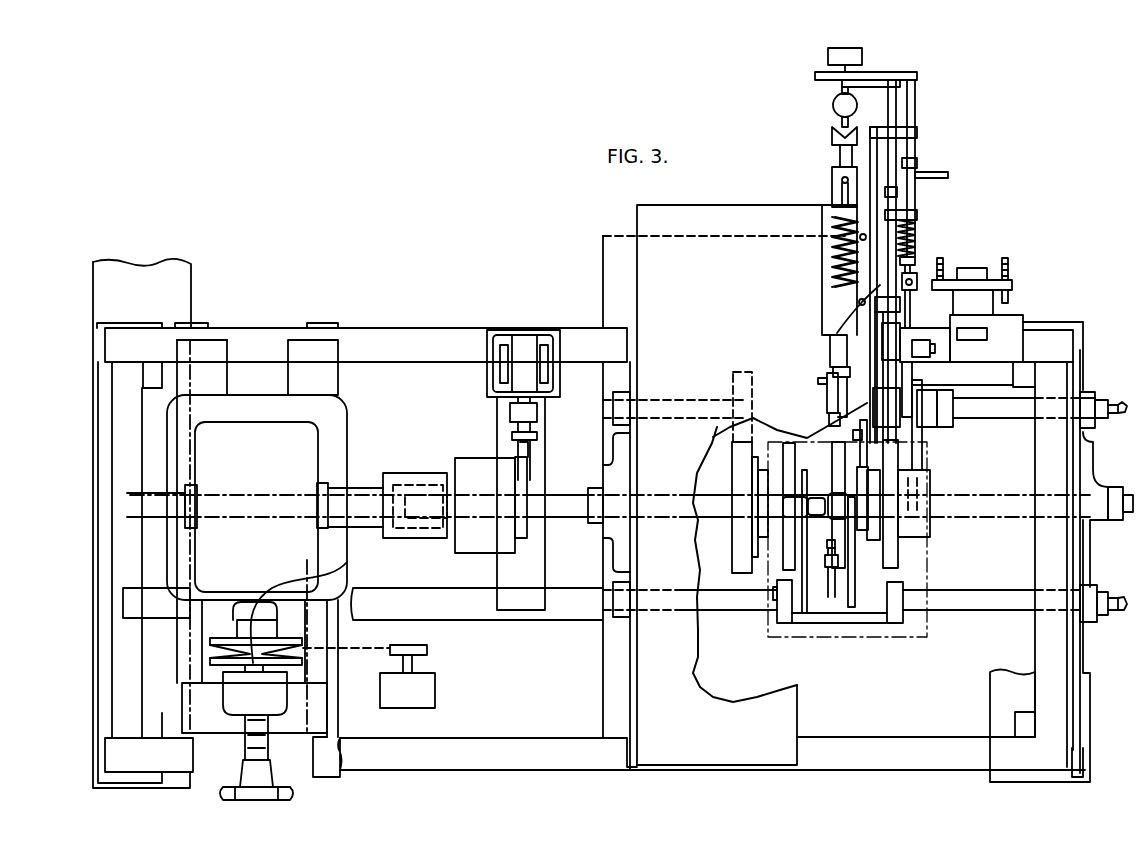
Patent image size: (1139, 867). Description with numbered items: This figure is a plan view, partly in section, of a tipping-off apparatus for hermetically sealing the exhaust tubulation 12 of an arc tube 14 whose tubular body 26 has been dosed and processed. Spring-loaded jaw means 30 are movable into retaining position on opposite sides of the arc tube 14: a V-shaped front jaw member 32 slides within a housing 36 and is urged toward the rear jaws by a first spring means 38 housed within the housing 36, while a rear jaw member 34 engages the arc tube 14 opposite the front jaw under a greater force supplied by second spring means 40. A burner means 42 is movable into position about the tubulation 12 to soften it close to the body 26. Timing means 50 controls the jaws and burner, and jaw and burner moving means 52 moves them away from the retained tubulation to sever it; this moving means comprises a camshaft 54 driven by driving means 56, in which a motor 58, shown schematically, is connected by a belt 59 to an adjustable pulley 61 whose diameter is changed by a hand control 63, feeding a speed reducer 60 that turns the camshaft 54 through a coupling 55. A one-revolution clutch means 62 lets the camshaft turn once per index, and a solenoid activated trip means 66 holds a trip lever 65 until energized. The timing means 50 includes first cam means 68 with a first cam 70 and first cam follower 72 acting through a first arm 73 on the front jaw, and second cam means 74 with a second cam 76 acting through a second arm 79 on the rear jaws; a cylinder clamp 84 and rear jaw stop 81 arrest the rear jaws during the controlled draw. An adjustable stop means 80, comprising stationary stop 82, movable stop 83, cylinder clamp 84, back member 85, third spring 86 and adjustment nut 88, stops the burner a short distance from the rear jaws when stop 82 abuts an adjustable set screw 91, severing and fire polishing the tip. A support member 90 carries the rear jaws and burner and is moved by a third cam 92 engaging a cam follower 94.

The exhaust tubulation 12 is at (852, 67).
The arc tube 14 is at (834, 106).
The tubular body 26 is at (856, 105).
The jaw means 30 is at (896, 102).
The front jaw member 32 is at (832, 138).
The rear jaw member 34 is at (842, 87).
The housing 36 is at (830, 207).
The first spring means 38 is at (833, 280).
The second spring means 40 is at (900, 317).
The burner means 42 is at (917, 74).
The timing means 50 is at (928, 562).
The jaw and burner moving means 52 is at (561, 520).
The camshaft 54 is at (565, 497).
The coupling 55 is at (426, 473).
The driving means 56 is at (205, 532).
The motor 58 is at (437, 688).
The belt 59 is at (366, 651).
The speed reducer 60 is at (310, 448).
The adjustable pulley 61 is at (210, 653).
The one-revolution clutch means 62 is at (522, 470).
The hand control 63 is at (273, 787).
The trip lever 65 is at (522, 452).
The solenoid activated trip means 66 is at (525, 343).
The first cam means 68 is at (788, 563).
The first cam 70 is at (787, 440).
The first cam follower 72 is at (783, 498).
The first arm 73 is at (827, 400).
The second cam means 74 is at (910, 567).
The second cam 76 is at (893, 545).
The second arm 79 is at (917, 433).
The adjustable stop means 80 is at (937, 183).
The rear jaw stop 81 is at (897, 192).
The stationary stop 82 is at (948, 173).
The movable stop 83 is at (917, 162).
The cylinder clamp 84 is at (917, 215).
The back member 85 is at (917, 260).
The third spring 86 is at (915, 243).
The adjustment nut 88 is at (920, 285).
The support member 90 is at (917, 133).
The adjustable set screw 91 is at (963, 263).
The third cam 92 is at (843, 582).
The cam follower 94 is at (837, 498).